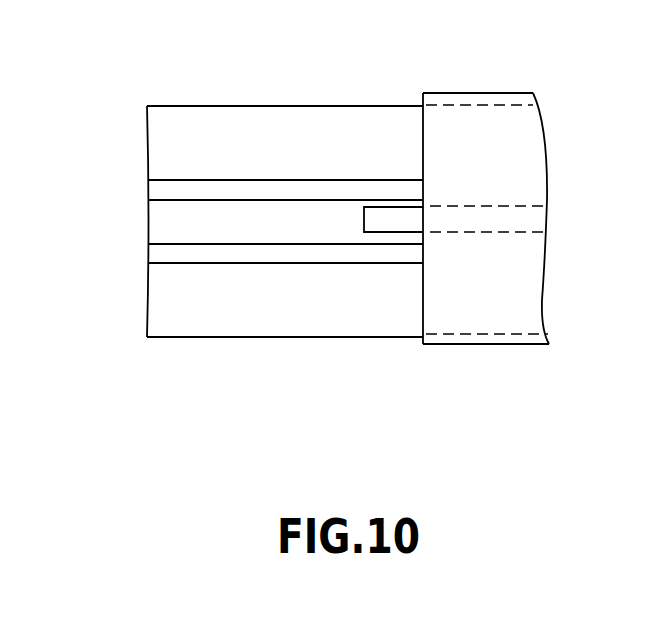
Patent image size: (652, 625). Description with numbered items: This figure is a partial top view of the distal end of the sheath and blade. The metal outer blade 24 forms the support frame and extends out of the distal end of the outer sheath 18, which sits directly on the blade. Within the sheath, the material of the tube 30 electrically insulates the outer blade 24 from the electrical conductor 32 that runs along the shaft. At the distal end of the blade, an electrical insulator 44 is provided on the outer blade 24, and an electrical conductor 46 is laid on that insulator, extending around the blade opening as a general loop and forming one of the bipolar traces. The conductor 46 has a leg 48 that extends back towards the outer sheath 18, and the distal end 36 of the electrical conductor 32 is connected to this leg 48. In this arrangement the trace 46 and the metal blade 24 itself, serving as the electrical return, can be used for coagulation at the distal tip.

The outer sheath 18 is at (492, 344).
The outer blade 24 is at (168, 318).
The tube 30 is at (492, 128).
The electrical conductor 32 is at (523, 206).
The distal end of the electrical conductor 36 is at (383, 207).
The electrical insulator 44 is at (167, 253).
The electrical conductor 46 is at (172, 232).
The leg 48 is at (203, 217).